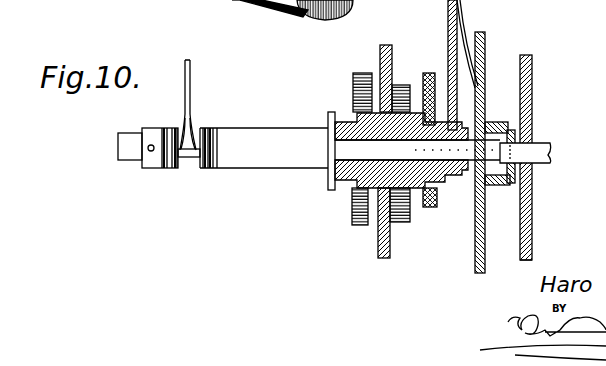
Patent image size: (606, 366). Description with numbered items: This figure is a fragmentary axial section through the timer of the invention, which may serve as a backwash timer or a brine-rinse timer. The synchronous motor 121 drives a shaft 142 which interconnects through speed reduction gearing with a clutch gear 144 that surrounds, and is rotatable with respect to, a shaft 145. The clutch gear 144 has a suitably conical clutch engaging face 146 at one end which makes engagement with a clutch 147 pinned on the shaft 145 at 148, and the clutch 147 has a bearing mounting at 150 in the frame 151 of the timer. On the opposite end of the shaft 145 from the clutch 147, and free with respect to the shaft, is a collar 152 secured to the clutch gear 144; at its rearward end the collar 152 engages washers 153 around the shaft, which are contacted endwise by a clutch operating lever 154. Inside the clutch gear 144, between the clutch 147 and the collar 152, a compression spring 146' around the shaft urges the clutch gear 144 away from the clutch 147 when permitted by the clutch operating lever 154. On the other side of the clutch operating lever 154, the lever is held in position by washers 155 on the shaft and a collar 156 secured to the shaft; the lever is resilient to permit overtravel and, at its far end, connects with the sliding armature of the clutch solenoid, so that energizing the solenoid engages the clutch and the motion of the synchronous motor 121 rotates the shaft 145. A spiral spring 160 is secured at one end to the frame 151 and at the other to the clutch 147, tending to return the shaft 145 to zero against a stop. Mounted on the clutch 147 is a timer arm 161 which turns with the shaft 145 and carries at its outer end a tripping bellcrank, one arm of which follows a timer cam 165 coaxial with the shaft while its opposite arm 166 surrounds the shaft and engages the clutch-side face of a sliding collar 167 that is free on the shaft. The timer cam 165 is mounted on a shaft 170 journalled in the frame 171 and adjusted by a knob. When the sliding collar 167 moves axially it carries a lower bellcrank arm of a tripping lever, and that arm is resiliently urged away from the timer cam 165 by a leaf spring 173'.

The synchronous motor 121 is at (238, 4).
The shaft 142 is at (387, 43).
The clutch gear 144 is at (347, 225).
The shaft 145 is at (528, 115).
The clutch engaging face 146 is at (332, 97).
The compression spring 146' is at (312, 173).
The clutch 147 is at (415, 193).
The pin 148 is at (405, 150).
The bearing mounting 150 is at (373, 225).
The frame 151 is at (392, 252).
The collar 152 is at (267, 160).
The washers 153 is at (210, 125).
The clutch operating lever 154 is at (190, 90).
The washers 155 is at (168, 168).
The collar 156 is at (147, 160).
The spiral spring 160 is at (403, 85).
The timer arm 161 is at (440, 28).
The timer cam 165 is at (483, 227).
The arm 166 is at (432, 97).
The sliding collar 167 is at (452, 125).
The shaft 170 is at (542, 142).
The frame 171 is at (533, 70).
The leaf spring 173' is at (502, 44).